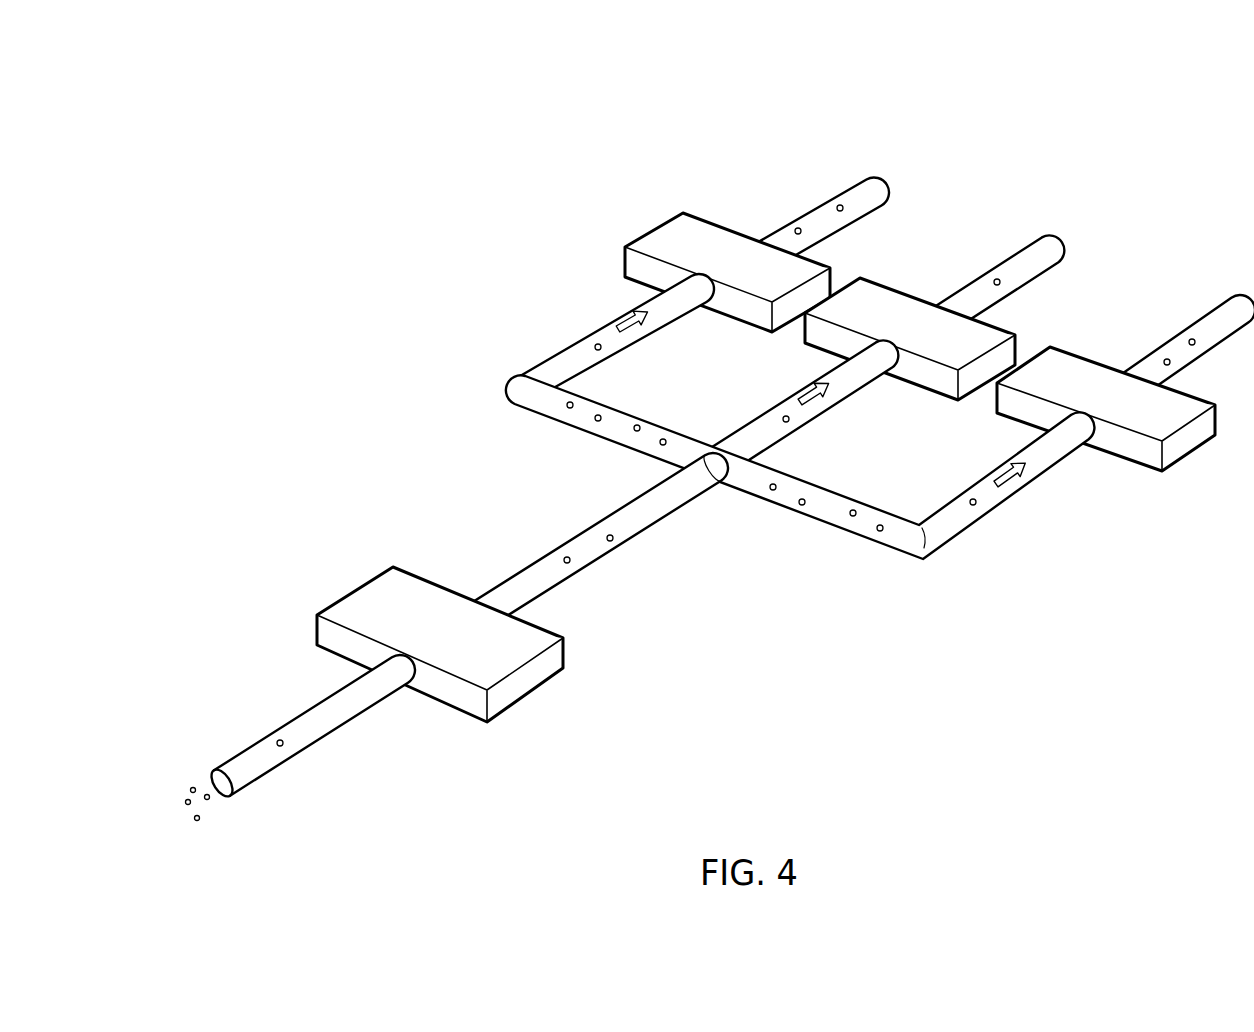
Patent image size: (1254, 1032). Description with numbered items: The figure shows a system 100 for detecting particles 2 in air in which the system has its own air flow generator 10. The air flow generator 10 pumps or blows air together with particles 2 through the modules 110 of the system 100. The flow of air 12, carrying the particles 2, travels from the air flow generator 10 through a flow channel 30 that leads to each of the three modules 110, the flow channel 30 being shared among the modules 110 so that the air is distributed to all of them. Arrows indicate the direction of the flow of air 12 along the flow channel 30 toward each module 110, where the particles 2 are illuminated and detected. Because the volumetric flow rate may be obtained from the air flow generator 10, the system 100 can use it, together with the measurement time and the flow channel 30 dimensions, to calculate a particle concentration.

The system 100 is at (1168, 112).
The air flow generator 10 is at (385, 590).
The module 110 is at (665, 238).
The flow channel 30 is at (637, 342).
The flow of air 12 is at (627, 320).
The particles 2 is at (197, 818).